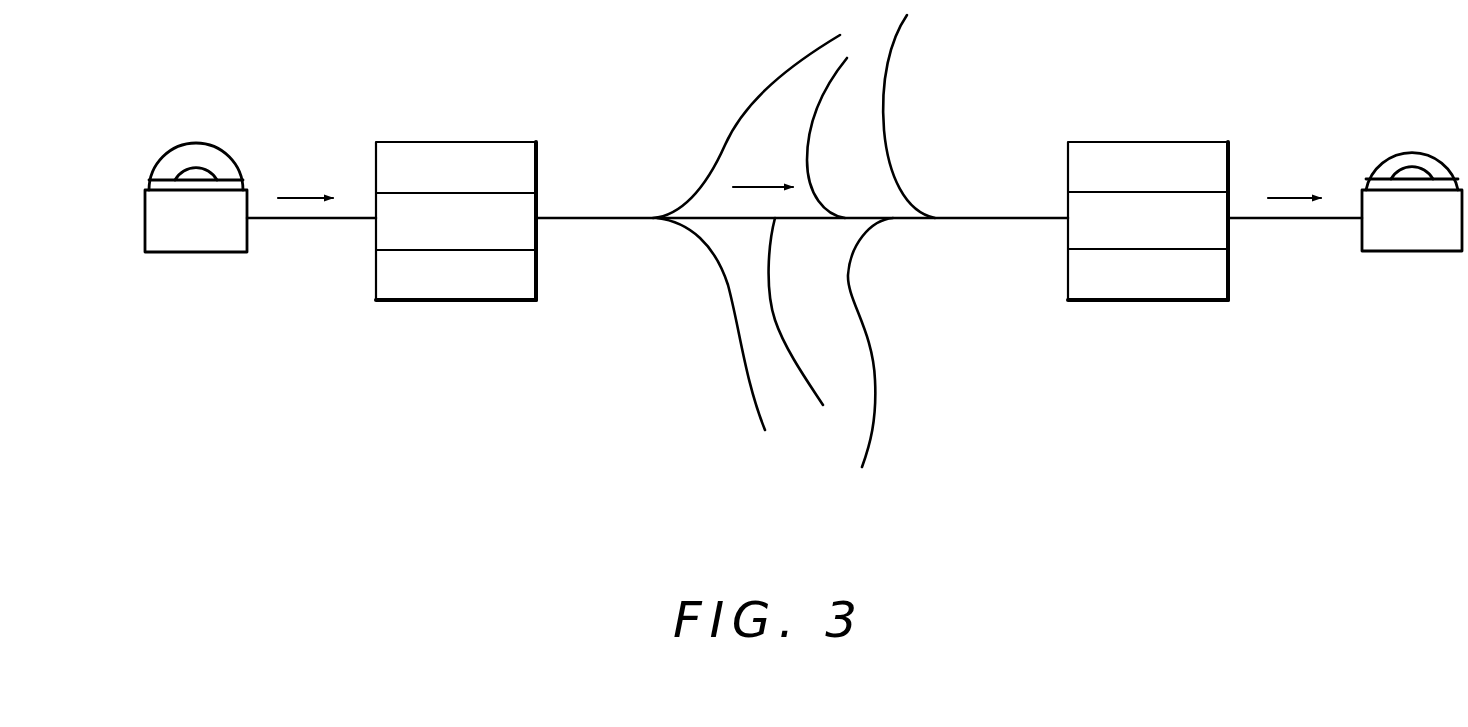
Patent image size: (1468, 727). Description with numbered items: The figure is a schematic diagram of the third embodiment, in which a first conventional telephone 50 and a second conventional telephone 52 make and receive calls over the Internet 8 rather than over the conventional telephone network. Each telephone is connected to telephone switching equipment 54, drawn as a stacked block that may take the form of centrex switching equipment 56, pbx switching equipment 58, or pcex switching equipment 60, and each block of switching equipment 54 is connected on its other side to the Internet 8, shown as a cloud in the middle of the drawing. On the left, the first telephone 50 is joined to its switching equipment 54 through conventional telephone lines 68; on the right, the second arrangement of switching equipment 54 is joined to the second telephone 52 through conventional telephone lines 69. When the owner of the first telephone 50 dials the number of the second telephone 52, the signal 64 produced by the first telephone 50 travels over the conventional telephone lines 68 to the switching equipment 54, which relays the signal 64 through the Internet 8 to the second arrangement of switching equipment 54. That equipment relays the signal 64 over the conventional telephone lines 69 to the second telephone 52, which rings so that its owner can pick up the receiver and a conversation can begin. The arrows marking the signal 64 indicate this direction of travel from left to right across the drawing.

The Internet 8 is at (708, 108).
The first conventional telephone 50 is at (198, 253).
The second conventional telephone 52 is at (1395, 252).
The telephone switching equipment 54 is at (440, 340).
The centrex switching equipment 56 is at (455, 152).
The pbx switching equipment 58 is at (536, 232).
The pcex switching equipment 60 is at (537, 280).
The signal 64 is at (316, 168).
The conventional telephone lines 68 is at (330, 219).
The conventional telephone lines 69 is at (1242, 219).